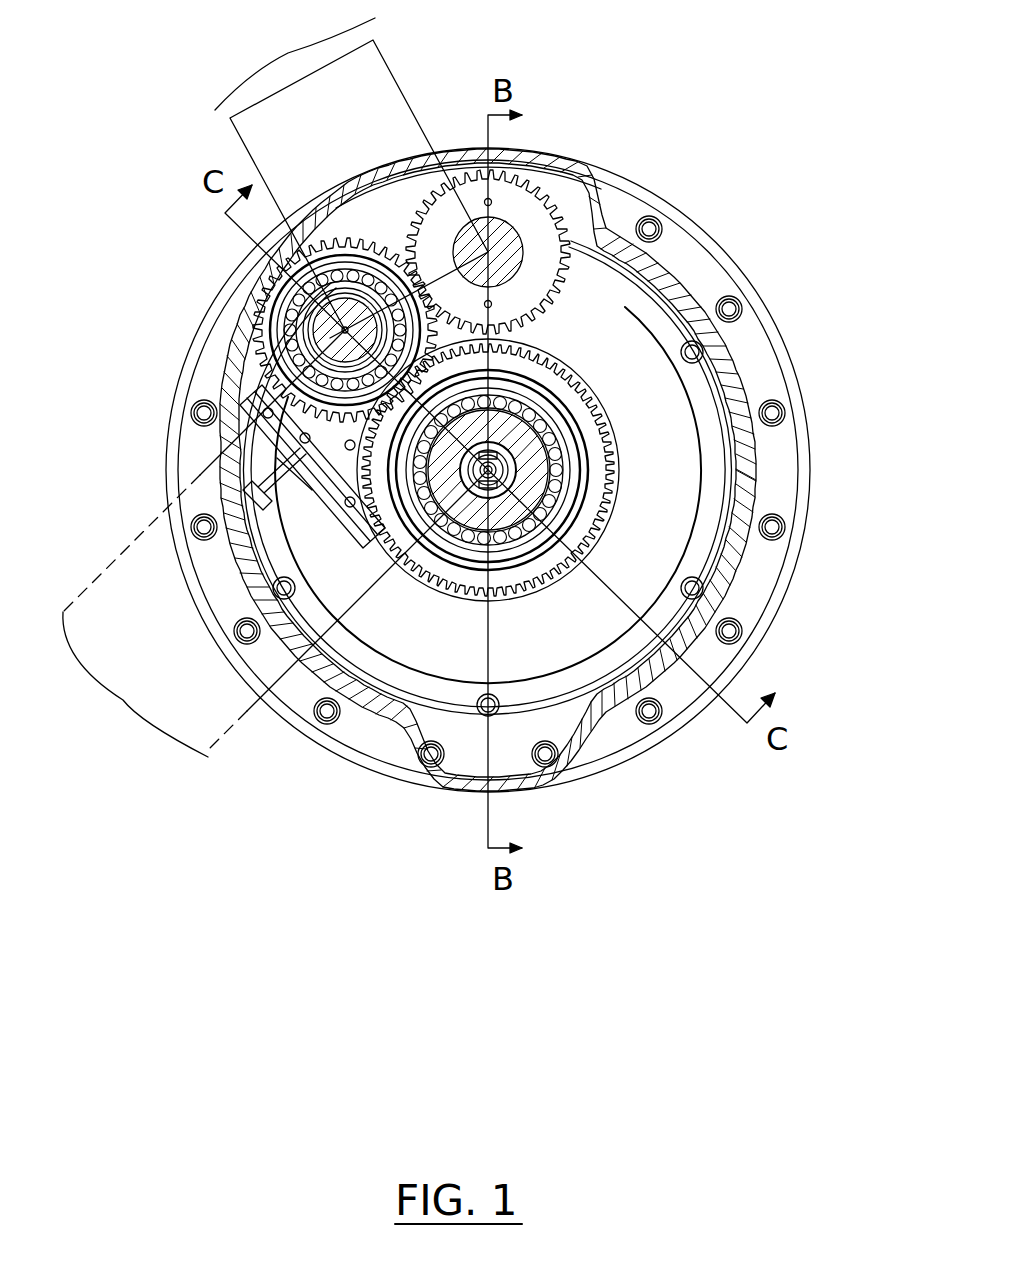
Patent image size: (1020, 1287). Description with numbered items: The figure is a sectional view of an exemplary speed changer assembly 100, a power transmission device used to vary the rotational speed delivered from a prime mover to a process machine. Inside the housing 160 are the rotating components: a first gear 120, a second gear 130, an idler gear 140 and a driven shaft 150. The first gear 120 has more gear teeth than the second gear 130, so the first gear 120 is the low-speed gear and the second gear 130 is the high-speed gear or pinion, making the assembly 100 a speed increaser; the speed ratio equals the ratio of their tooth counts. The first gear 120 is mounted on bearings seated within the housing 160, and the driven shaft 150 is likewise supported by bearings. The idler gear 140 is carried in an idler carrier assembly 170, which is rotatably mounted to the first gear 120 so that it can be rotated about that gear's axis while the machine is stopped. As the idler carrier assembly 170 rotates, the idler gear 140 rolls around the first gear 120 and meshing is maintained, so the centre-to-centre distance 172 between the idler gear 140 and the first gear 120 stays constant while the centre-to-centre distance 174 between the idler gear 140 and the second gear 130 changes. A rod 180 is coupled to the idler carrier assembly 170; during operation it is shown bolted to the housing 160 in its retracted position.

The speed changer assembly 100 is at (708, 56).
The first gear 120 is at (585, 527).
The second gear 130 is at (520, 200).
The idler gear 140 is at (278, 313).
The driven shaft 150 is at (500, 245).
The housing 160 is at (347, 733).
The idler carrier assembly 170 is at (310, 458).
The centre-to-centre distance 172 is at (275, 543).
The centre-to-centre distance 174 is at (351, 177).
The rod 180 is at (303, 493).